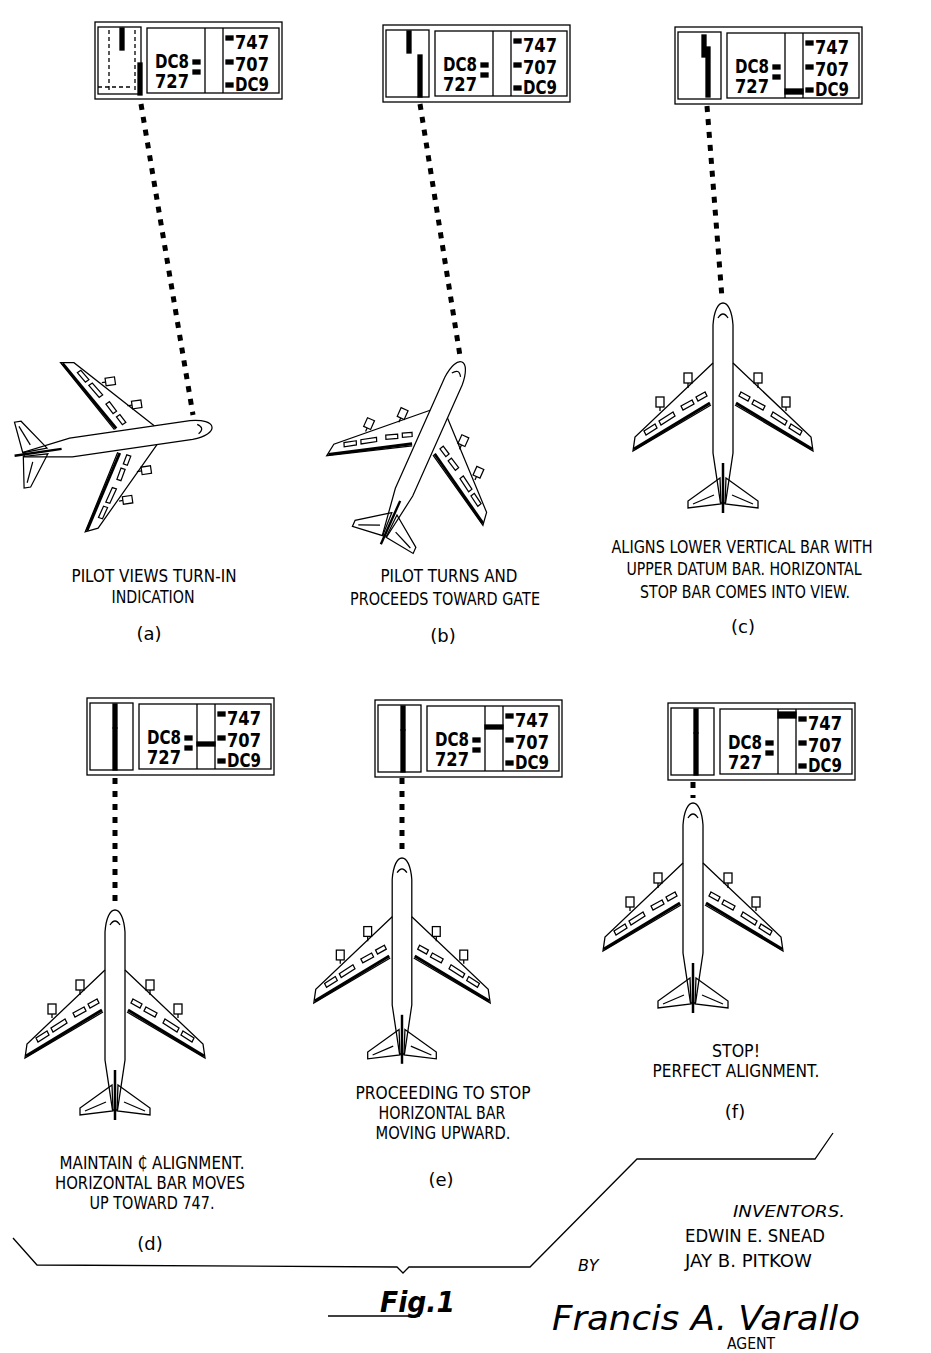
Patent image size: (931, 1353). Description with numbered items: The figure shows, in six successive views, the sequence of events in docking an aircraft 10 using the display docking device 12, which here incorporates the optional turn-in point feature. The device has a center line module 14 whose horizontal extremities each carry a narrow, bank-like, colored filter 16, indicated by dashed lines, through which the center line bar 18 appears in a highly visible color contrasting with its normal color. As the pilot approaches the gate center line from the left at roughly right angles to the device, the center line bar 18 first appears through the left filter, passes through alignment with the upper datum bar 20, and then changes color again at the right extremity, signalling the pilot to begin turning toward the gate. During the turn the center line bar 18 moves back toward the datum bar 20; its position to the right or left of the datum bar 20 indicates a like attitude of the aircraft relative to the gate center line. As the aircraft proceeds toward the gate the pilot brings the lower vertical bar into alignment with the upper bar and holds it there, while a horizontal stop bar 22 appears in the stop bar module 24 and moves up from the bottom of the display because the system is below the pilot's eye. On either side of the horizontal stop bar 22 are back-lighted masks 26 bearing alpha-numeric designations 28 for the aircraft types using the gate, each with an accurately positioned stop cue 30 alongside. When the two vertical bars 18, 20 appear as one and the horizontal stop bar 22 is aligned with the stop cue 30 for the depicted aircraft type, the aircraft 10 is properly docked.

The aircraft 10 is at (172, 437).
The display docking device 12 is at (312, 91).
The center line module 14 is at (113, 62).
The colored filter 16 is at (100, 88).
The center line bar 18 is at (141, 96).
The datum bar 20 is at (120, 40).
The horizontal stop bar 22 is at (793, 98).
The stop bar module 24 is at (213, 93).
The back-lighted masks 26 is at (193, 90).
The alpha-numeric designations 28 is at (270, 40).
The stop cue 30 is at (230, 92).